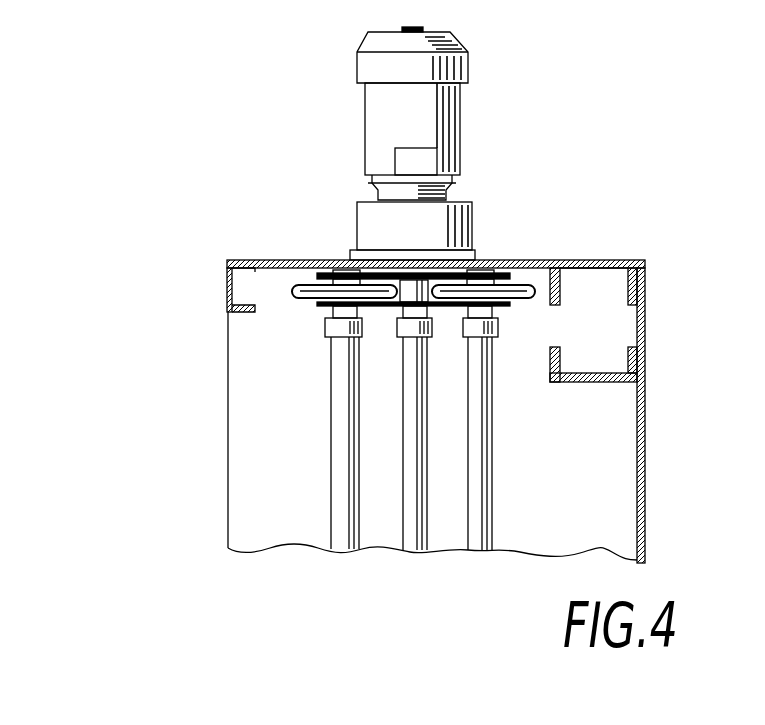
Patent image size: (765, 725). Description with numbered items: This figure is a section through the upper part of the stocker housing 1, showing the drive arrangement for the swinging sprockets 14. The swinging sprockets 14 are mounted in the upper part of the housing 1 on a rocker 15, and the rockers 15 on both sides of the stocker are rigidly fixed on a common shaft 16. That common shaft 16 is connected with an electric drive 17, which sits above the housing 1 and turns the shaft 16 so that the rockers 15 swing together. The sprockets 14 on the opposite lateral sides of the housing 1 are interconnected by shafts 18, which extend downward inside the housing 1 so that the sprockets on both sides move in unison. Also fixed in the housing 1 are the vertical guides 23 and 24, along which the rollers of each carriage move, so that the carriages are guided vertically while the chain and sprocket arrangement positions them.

The housing 1 is at (645, 446).
The swinging sprockets 14 is at (307, 287).
The rocker 15 is at (328, 276).
The common shaft 16 is at (410, 440).
The electric drive 17 is at (373, 119).
The shafts 18 is at (338, 387).
The vertical guide 23 is at (614, 270).
The vertical guide 24 is at (227, 290).